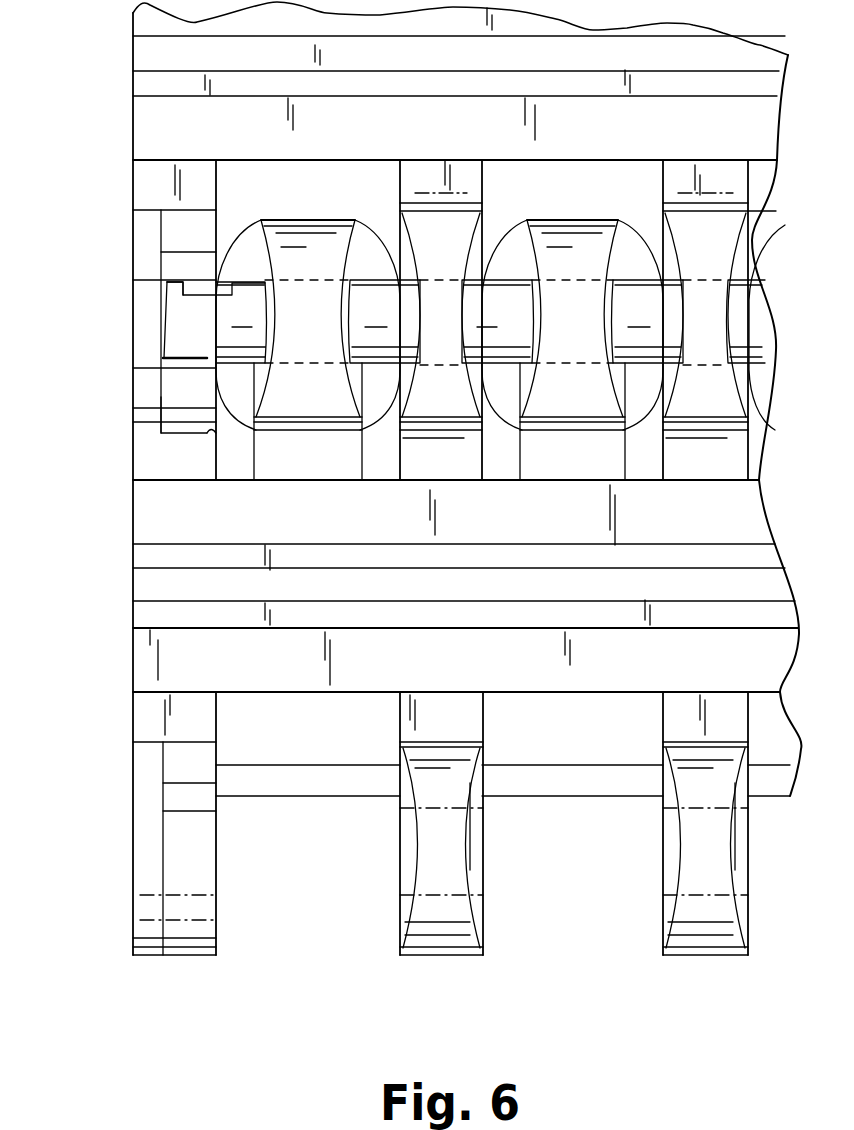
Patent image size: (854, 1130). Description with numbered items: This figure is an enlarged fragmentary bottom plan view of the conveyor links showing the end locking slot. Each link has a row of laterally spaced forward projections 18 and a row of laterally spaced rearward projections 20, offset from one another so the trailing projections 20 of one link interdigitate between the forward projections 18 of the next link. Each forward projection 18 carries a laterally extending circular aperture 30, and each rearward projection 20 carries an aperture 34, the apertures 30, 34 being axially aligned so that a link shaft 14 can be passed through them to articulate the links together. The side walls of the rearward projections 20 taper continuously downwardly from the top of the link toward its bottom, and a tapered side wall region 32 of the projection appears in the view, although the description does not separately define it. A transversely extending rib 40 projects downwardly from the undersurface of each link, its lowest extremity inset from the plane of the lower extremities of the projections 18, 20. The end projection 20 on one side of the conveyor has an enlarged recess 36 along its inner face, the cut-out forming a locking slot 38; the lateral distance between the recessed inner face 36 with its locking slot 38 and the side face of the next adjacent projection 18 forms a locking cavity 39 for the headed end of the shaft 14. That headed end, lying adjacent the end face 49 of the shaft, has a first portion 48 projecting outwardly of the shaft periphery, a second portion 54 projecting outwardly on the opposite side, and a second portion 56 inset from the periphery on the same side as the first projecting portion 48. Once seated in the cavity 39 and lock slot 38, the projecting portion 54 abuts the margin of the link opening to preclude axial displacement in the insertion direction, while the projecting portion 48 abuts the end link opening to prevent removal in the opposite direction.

The link shaft 14 is at (390, 292).
The forward projection 18 is at (312, 240).
The rearward projection 20 is at (442, 930).
The circular aperture 30 is at (260, 308).
The contact leg 32 is at (468, 800).
The aperture 34 is at (185, 890).
The enlarged recess 36 is at (160, 403).
The locking slot 38 is at (185, 833).
The locking cavity 39 is at (213, 433).
The transversely extending rib 40 is at (173, 788).
The first portion 48 is at (200, 297).
The end face 49 is at (163, 313).
The second portion 54 is at (205, 360).
The second portion 56 is at (173, 281).